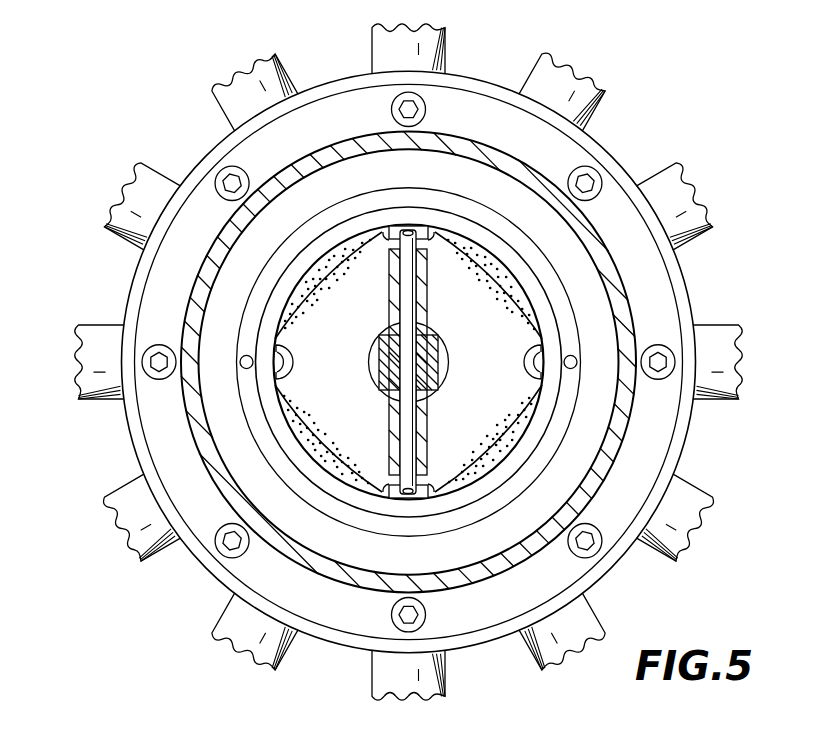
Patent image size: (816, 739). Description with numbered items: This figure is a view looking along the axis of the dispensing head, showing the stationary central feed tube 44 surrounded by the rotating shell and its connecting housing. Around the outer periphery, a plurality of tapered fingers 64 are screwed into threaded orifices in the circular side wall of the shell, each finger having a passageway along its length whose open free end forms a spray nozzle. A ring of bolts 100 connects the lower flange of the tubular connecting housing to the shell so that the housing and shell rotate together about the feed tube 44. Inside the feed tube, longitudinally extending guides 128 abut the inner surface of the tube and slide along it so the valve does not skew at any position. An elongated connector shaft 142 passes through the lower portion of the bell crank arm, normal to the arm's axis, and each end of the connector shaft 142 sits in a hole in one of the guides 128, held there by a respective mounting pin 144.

The tapered finger 64 is at (236, 90).
The bolt 100 is at (396, 100).
The central feed tube 44 is at (350, 224).
The guide 128 is at (389, 222).
The connector shaft 142 is at (405, 314).
The mounting pin 144 is at (419, 226).